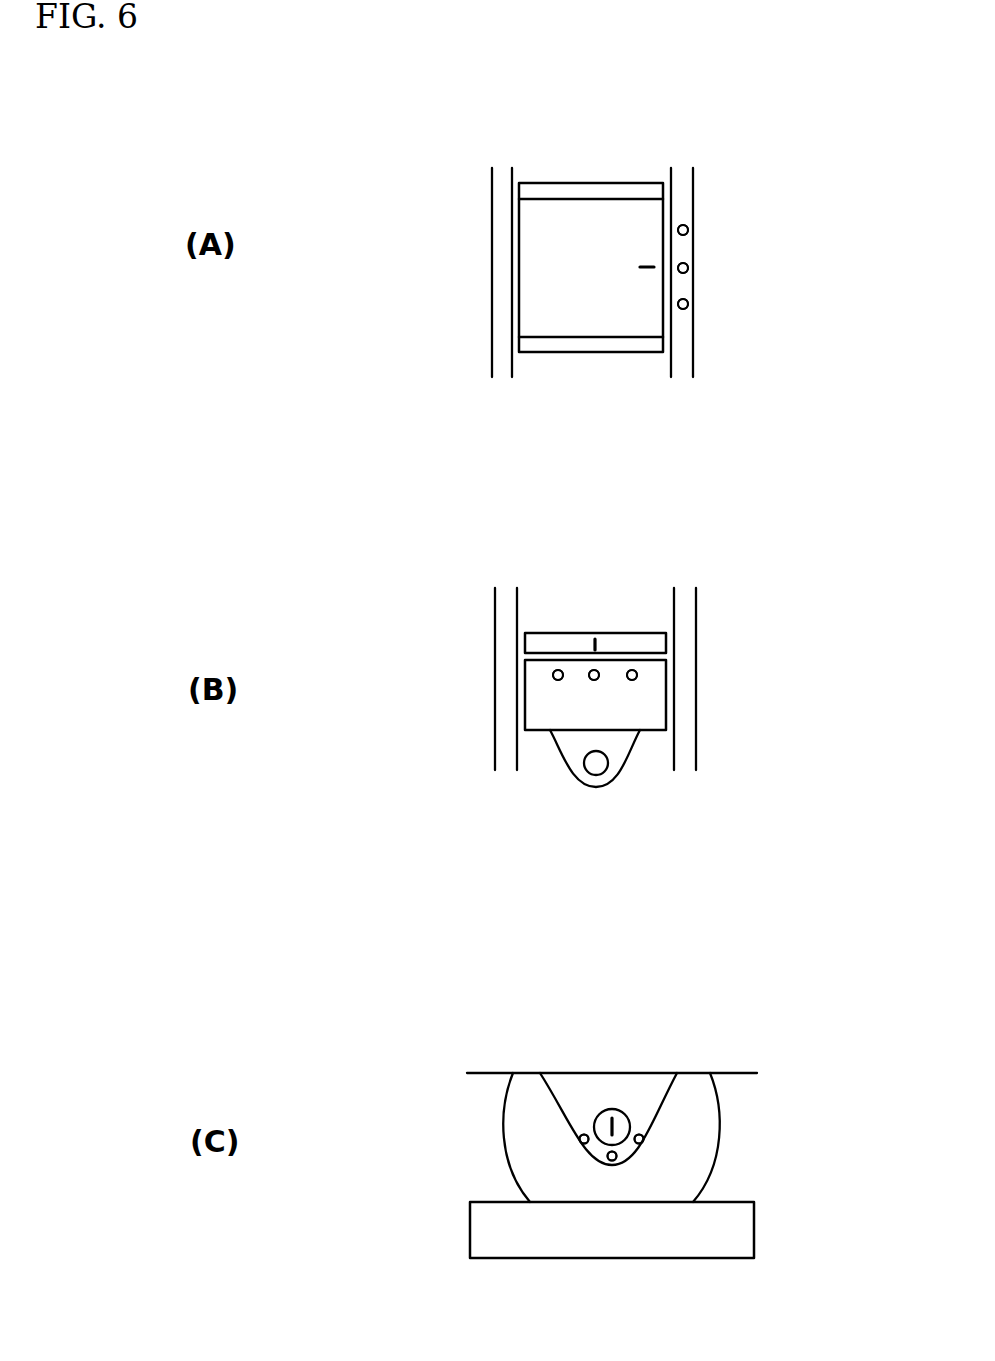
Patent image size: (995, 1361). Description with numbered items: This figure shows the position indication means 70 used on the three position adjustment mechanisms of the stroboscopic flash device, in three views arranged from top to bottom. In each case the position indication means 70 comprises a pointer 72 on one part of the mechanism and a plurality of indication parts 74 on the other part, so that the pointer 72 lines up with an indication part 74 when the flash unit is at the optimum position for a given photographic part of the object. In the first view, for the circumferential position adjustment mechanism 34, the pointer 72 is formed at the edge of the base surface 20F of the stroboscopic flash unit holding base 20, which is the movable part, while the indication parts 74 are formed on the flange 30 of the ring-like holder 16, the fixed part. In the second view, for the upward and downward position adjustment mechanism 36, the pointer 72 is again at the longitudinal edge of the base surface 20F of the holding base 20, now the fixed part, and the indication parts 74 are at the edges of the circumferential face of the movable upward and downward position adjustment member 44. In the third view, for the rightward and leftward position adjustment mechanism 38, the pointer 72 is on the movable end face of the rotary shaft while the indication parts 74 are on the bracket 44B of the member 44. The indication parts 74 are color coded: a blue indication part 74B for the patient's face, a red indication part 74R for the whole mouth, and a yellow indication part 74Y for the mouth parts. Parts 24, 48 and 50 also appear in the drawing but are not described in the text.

The ring-like holder 16 is at (700, 181).
The stroboscopic flash unit holding base 20 is at (573, 219).
The base surface 20F is at (527, 316).
The guide rail 24 is at (503, 223).
The flange 30 is at (697, 216).
The circumferential position adjustment mechanism 34 is at (699, 147).
The upward and downward position adjustment mechanism 36 is at (650, 620).
The rightward and leftward position adjustment mechanism 38 is at (697, 1078).
The upward and downward position adjustment member 44 is at (647, 703).
The bracket 44B is at (596, 790).
The body 48 is at (523, 1122).
The base 50 is at (739, 1233).
The position indication means 70 is at (647, 298).
The pointer 72 is at (640, 267).
The indication parts 74 is at (702, 256).
The yellow indication part 74Y is at (688, 231).
The red indication part 74R is at (688, 268).
The blue indication part 74B is at (688, 304).